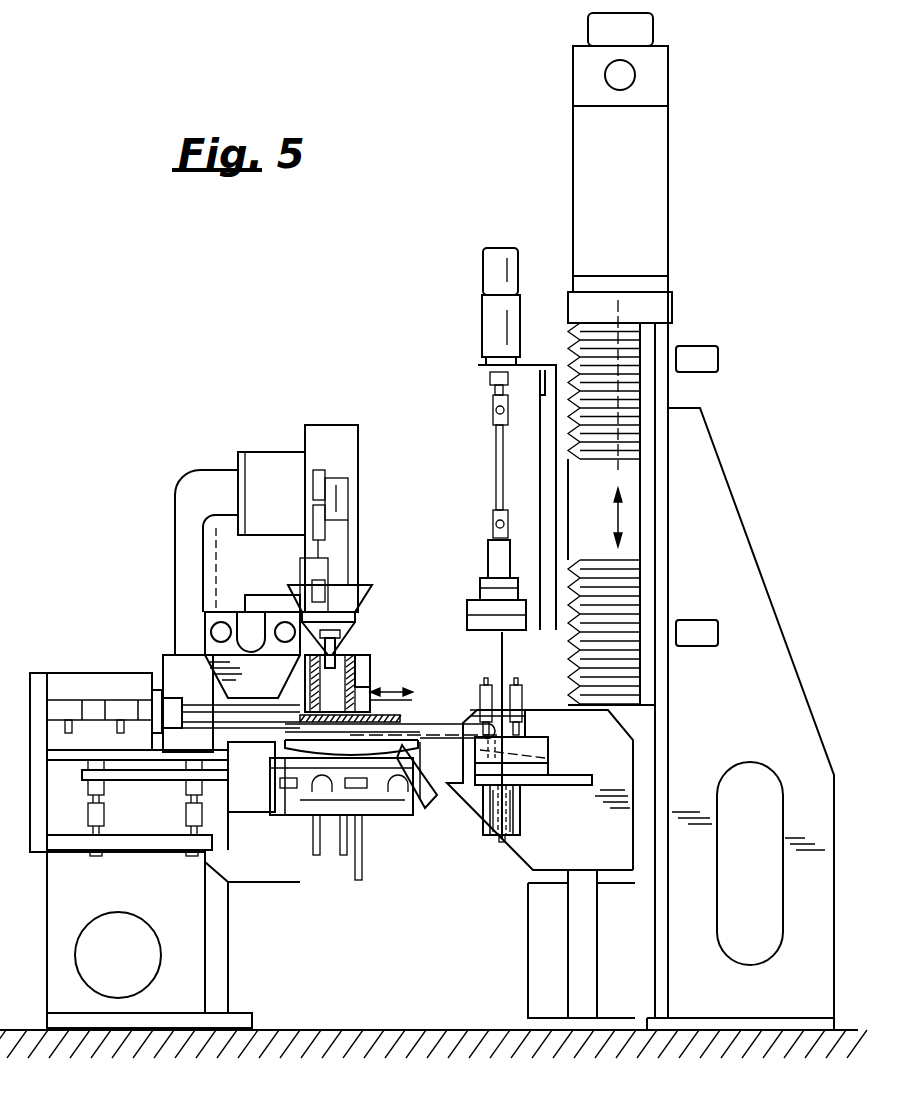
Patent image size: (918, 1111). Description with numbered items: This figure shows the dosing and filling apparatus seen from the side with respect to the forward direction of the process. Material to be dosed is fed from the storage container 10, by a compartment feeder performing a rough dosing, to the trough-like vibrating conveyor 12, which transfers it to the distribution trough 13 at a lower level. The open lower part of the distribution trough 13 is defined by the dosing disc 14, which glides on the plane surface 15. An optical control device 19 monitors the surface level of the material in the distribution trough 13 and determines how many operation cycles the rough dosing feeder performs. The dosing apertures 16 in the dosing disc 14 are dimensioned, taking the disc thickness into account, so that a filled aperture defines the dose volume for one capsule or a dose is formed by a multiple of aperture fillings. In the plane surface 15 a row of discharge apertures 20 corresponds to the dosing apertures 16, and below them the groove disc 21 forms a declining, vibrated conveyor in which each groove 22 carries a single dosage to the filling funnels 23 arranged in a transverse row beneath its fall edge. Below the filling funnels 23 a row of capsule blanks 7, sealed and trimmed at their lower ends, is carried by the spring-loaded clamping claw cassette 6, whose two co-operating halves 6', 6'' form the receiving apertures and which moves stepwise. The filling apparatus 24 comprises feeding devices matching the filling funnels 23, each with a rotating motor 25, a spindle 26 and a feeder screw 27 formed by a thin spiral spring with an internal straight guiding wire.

The clamping claw cassette 6 is at (532, 810).
The clamping claw cassette half 6' is at (546, 820).
The clamping claw cassette half 6'' is at (458, 833).
The capsule blank 7 is at (501, 843).
The storage container 10 is at (352, 470).
The vibrating conveyor 12 is at (370, 606).
The distribution trough 13 is at (370, 668).
The dosing disc 14 is at (235, 689).
The plane surface 15 is at (410, 716).
The dosing aperture 16 is at (302, 700).
The optical control device 19 is at (345, 631).
The discharge aperture 20 is at (380, 690).
The groove disc 21 is at (428, 770).
The groove 22 is at (368, 745).
The filling funnel 23 is at (512, 752).
The filling apparatus 24 is at (380, 360).
The rotating motor 25 is at (489, 278).
The spindle 26 is at (497, 447).
The feeder screw 27 is at (500, 734).